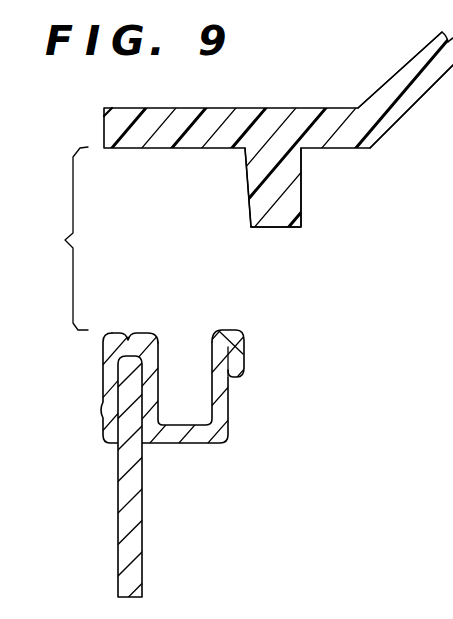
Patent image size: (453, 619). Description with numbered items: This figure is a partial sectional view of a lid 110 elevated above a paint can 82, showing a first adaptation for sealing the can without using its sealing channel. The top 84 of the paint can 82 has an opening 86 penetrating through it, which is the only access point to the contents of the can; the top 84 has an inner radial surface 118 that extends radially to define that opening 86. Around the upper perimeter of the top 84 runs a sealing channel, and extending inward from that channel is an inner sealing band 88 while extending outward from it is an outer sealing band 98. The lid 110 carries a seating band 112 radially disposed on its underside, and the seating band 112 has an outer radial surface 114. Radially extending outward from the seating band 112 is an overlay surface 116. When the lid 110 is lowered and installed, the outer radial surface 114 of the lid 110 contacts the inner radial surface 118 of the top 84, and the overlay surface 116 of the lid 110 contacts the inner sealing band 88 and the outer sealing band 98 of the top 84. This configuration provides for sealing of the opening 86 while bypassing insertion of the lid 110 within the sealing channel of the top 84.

The paint can 82 is at (118, 558).
The top 84 is at (102, 392).
The opening 86 is at (292, 362).
The inner sealing band 88 is at (181, 439).
The outer sealing band 98 is at (126, 338).
The lid 110 is at (394, 78).
The seating band 112 is at (301, 192).
The outer radial surface 114 is at (247, 177).
The overlay surface 116 is at (188, 149).
The inner radial surface 118 is at (248, 358).